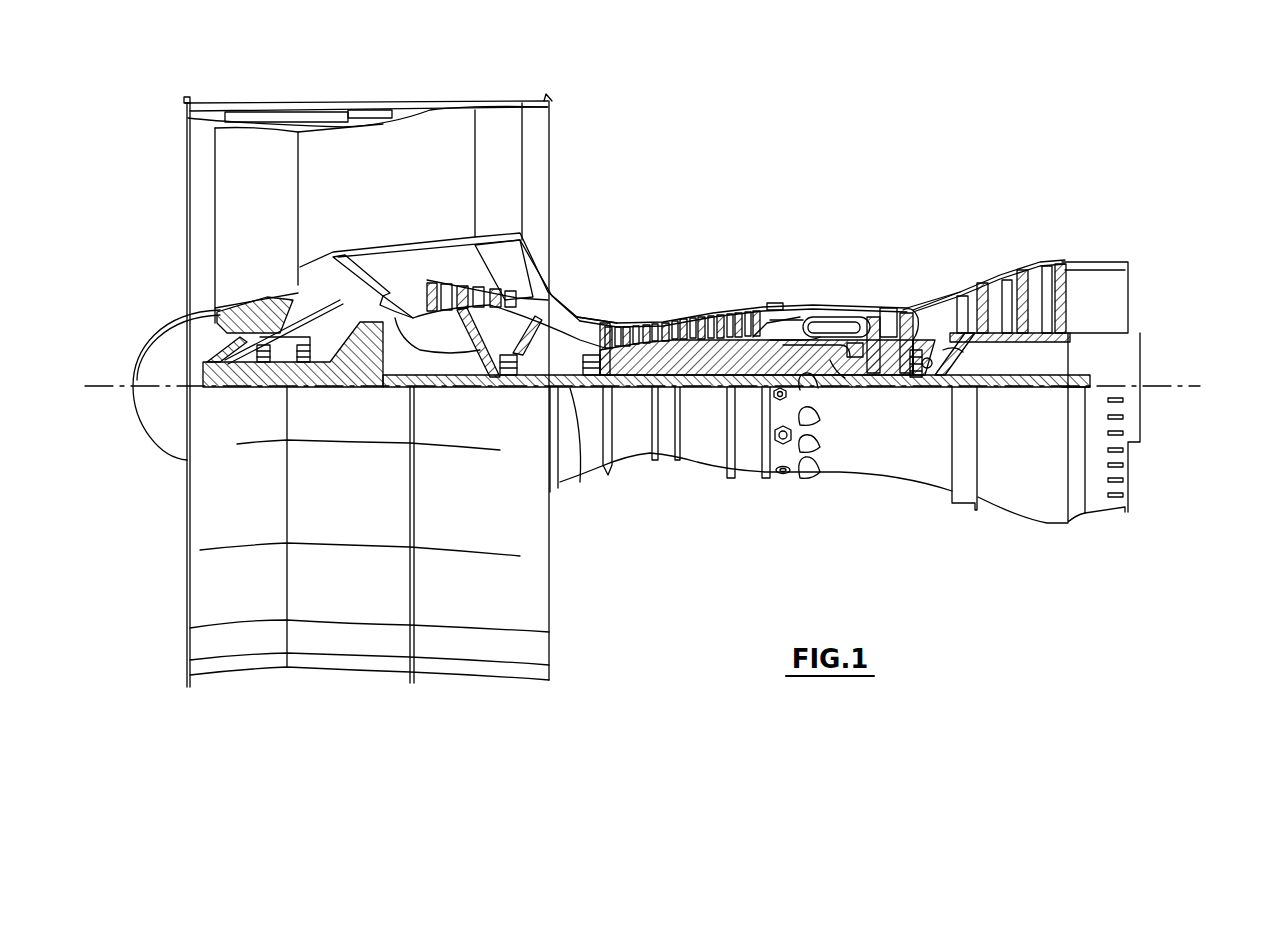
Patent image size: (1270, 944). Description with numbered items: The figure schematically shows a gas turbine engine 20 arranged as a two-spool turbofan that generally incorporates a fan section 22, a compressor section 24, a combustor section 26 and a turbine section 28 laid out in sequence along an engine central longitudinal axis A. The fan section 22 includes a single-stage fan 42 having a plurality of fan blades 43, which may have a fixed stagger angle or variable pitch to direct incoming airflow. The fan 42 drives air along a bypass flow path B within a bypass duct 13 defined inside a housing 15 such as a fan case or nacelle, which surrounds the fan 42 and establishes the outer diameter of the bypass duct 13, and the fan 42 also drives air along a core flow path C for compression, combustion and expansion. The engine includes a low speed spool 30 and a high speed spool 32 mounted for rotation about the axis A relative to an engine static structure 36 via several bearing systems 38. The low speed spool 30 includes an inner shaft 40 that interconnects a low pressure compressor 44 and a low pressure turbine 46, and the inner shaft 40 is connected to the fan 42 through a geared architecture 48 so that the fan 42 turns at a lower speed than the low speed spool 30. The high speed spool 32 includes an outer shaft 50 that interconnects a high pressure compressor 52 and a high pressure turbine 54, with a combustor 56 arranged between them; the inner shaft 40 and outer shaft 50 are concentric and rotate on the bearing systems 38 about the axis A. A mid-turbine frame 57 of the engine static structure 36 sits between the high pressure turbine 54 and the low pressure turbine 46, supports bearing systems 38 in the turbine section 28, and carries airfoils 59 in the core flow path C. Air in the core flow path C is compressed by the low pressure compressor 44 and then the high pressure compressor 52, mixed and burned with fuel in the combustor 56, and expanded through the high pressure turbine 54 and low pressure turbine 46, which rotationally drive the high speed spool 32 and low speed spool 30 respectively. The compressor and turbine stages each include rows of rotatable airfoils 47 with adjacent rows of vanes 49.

The gas turbine engine 20 is at (840, 150).
The fan section 22 is at (297, 92).
The compressor section 24 is at (514, 294).
The combustor section 26 is at (841, 299).
The turbine section 28 is at (1017, 278).
The low speed spool 30 is at (707, 400).
The high speed spool 32 is at (753, 337).
The engine static structure 36 is at (748, 480).
The bearing systems 38 is at (508, 387).
The inner shaft 40 is at (575, 470).
The fan 42 is at (271, 231).
The fan blades 43 is at (285, 233).
The low pressure compressor 44 is at (467, 295).
The low pressure turbine 46 is at (998, 280).
The rotatable airfoils 47 is at (431, 290).
The geared architecture 48 is at (375, 367).
The vanes 49 is at (453, 288).
The outer shaft 50 is at (830, 367).
The high pressure compressor 52 is at (687, 317).
The high pressure turbine 54 is at (903, 310).
The combustor 56 is at (827, 328).
The mid-turbine frame 57 is at (930, 300).
The airfoils 59 is at (963, 352).
The bypass duct 13 is at (412, 122).
The housing 15 is at (370, 113).
The engine central longitudinal axis A is at (1222, 386).
The bypass flow path B is at (318, 177).
The core flow path C is at (360, 281).